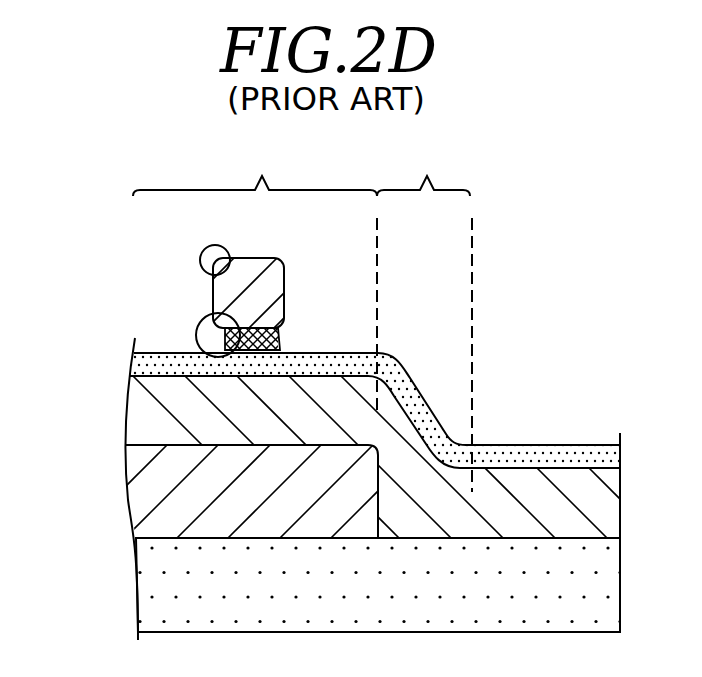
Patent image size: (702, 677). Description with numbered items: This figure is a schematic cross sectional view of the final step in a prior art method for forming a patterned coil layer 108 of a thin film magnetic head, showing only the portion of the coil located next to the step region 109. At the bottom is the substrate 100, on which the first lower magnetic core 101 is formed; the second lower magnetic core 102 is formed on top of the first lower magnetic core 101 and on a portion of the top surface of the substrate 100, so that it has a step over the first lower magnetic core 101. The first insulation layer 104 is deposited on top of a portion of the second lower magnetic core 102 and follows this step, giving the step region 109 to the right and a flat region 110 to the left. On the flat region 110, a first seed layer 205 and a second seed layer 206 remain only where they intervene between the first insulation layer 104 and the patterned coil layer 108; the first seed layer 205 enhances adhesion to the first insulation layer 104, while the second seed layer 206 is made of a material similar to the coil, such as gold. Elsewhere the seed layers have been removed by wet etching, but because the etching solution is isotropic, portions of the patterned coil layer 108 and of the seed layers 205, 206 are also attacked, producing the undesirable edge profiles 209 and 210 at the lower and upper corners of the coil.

The substrate 100 is at (157, 585).
The first lower magnetic core 101 is at (153, 493).
The second lower magnetic core 102 is at (155, 407).
The first insulation layer 104 is at (135, 365).
The patterned coil layer 108 is at (238, 270).
The step region 109 is at (423, 164).
The flat region 110 is at (255, 164).
The first seed layer 205 is at (270, 347).
The second seed layer 206 is at (277, 332).
The undesirable edge profile 209 is at (197, 332).
The undesirable edge profile 210 is at (202, 250).